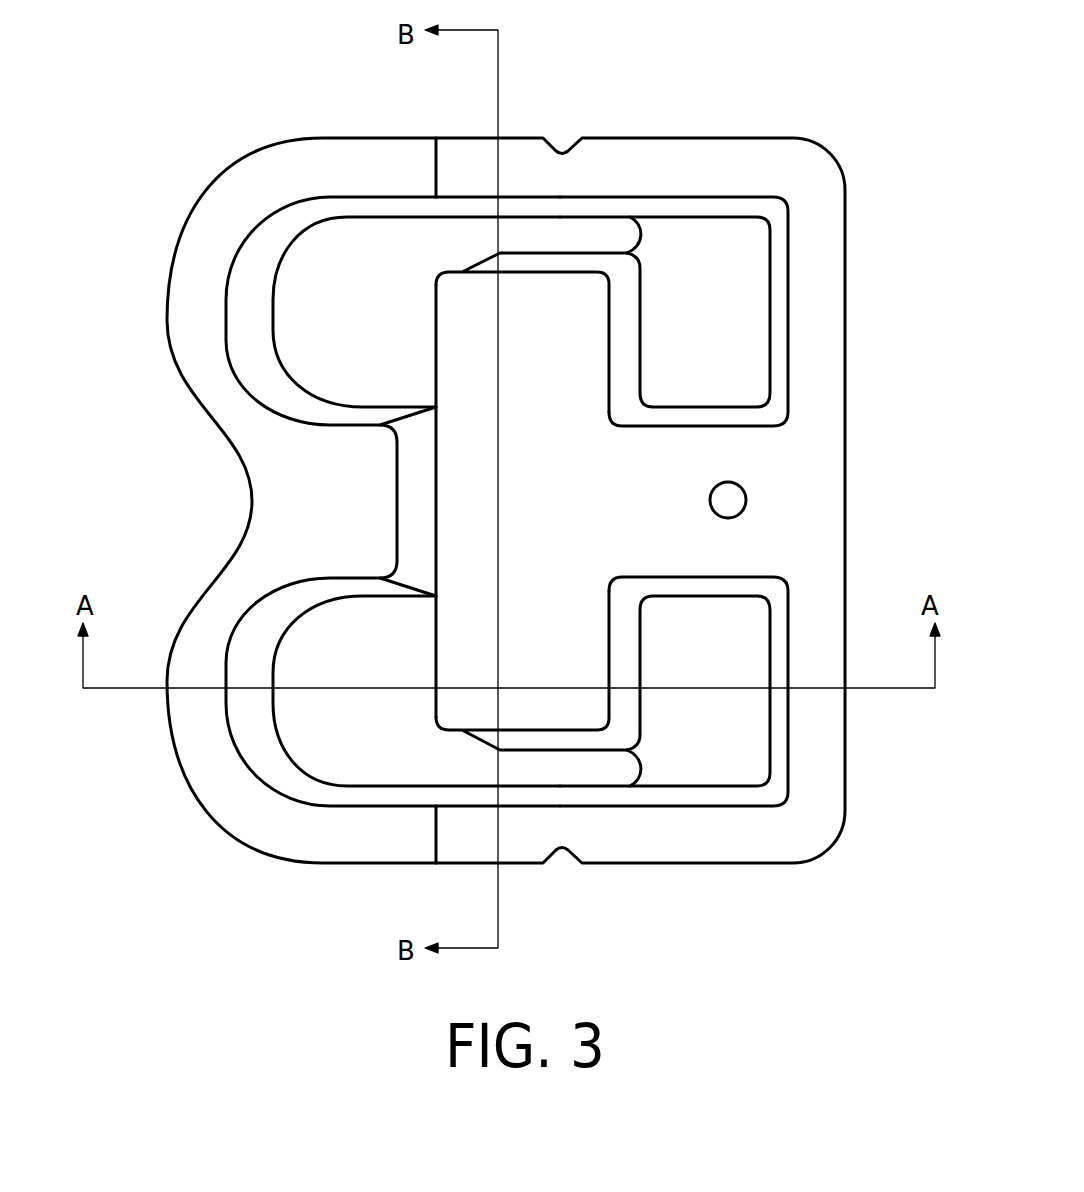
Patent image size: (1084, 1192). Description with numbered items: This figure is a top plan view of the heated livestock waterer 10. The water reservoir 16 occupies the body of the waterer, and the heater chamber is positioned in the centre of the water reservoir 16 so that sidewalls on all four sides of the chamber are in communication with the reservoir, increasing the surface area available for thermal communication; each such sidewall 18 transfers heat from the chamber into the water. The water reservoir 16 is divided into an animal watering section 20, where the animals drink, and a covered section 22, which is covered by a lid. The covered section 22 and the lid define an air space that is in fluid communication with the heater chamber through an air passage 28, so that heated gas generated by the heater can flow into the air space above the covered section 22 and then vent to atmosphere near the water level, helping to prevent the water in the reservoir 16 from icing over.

The livestock waterer 10 is at (193, 83).
The water reservoir 16 is at (355, 735).
The sidewall 18 is at (624, 317).
The animal watering section 20 is at (298, 273).
The covered section 22 is at (672, 735).
The air passage 28 is at (746, 500).